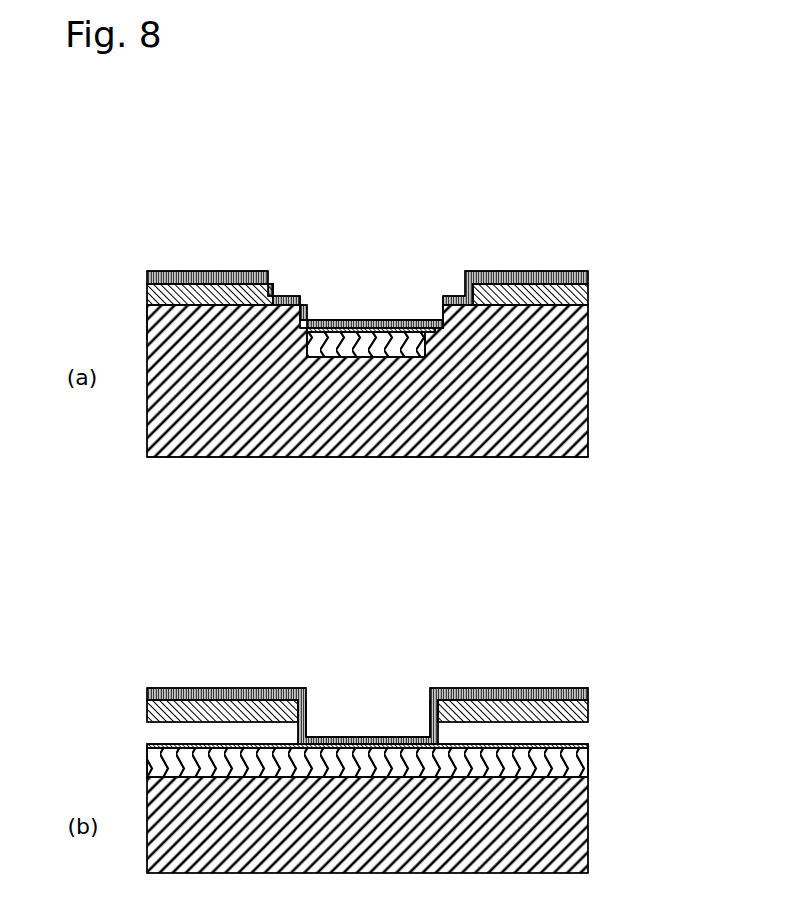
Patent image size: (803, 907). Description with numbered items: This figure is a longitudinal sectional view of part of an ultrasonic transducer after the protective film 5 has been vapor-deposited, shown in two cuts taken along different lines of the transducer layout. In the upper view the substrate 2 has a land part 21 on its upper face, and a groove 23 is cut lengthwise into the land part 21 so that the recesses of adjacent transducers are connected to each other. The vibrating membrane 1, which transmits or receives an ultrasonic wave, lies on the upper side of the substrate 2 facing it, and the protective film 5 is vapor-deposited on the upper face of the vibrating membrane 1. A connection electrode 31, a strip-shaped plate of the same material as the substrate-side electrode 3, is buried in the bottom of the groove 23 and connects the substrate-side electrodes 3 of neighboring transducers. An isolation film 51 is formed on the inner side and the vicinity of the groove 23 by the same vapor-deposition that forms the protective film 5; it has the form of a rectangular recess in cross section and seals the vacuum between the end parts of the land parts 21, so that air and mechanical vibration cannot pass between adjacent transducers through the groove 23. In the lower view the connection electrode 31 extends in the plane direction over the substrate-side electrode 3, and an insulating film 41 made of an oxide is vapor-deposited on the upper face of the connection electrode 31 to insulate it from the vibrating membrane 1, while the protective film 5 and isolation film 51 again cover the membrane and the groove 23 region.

The vibrating membrane 1 is at (588, 290).
The substrate 2 is at (588, 395).
The substrate-side electrode 3 is at (588, 805).
The protective film 5 is at (250, 272).
The land part 21 is at (147, 315).
The groove 23 is at (361, 300).
The connection electrode 31 is at (310, 355).
The insulating film 41 is at (147, 745).
The isolation film 51 is at (411, 327).